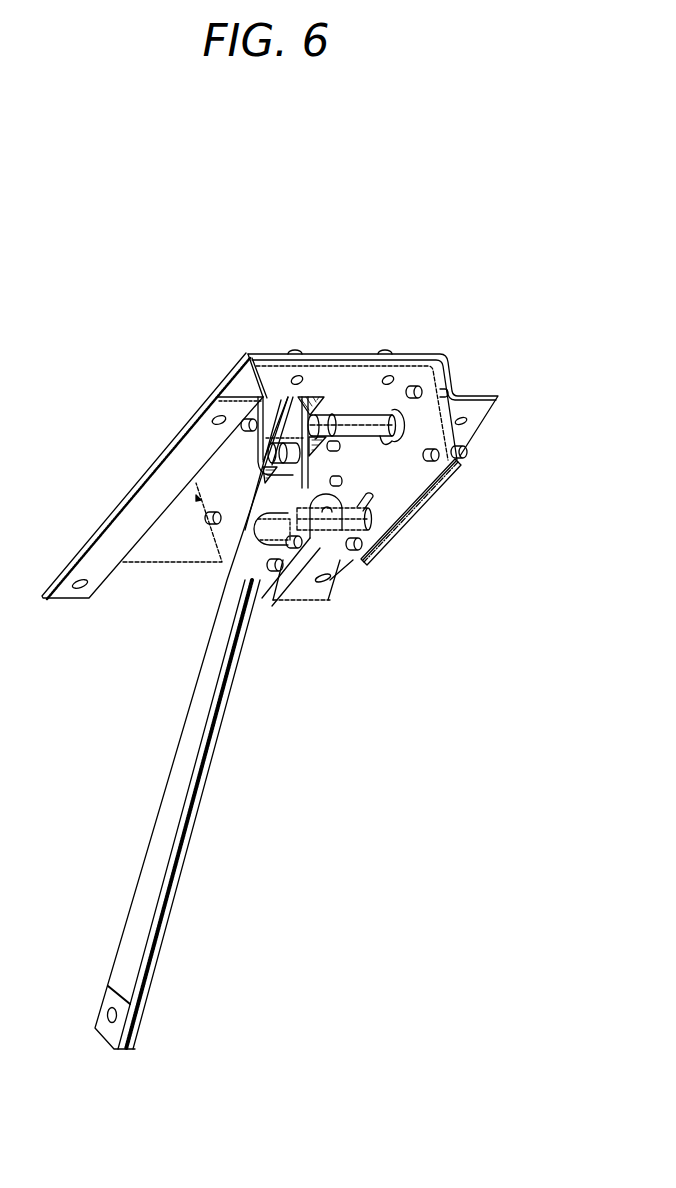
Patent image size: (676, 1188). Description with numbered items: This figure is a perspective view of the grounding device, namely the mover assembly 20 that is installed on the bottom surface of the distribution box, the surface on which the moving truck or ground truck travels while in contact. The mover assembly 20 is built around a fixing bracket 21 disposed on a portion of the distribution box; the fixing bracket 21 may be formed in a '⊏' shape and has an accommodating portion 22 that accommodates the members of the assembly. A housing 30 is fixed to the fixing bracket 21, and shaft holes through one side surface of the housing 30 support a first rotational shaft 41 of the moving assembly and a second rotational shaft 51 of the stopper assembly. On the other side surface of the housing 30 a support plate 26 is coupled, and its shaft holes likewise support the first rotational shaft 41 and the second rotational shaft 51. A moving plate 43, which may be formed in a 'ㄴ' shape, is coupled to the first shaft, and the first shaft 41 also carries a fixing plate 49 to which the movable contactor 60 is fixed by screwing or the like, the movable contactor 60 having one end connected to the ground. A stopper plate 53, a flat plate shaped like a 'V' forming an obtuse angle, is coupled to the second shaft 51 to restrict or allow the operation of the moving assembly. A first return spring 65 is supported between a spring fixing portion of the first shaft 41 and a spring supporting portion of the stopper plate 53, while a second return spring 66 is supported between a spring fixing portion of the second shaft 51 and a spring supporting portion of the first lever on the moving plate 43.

The mover assembly 20 is at (521, 331).
The fixing bracket 21 is at (452, 372).
The accommodating portion 22 is at (159, 541).
The support plate 26 is at (437, 484).
The housing 30 is at (281, 388).
The first rotational shaft 41 is at (372, 540).
The moving plate 43 is at (296, 562).
The fixing plate 49 is at (325, 585).
The second rotational shaft 51 is at (364, 412).
The stopper plate 53 is at (313, 395).
The movable contactor 60 is at (338, 580).
The first return spring 65 is at (268, 480).
The second return spring 66 is at (340, 447).